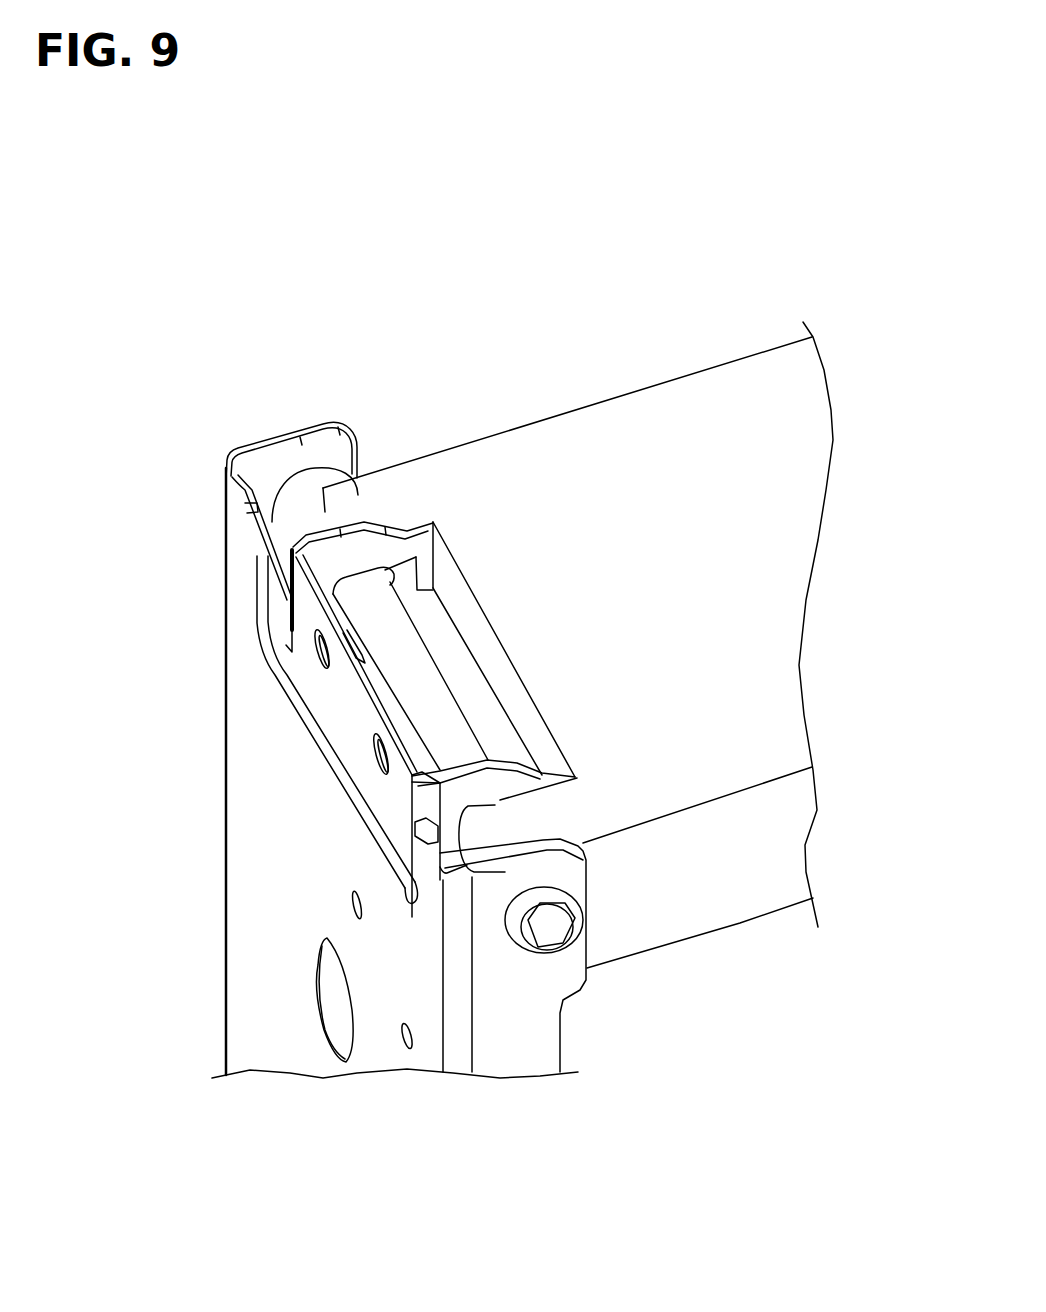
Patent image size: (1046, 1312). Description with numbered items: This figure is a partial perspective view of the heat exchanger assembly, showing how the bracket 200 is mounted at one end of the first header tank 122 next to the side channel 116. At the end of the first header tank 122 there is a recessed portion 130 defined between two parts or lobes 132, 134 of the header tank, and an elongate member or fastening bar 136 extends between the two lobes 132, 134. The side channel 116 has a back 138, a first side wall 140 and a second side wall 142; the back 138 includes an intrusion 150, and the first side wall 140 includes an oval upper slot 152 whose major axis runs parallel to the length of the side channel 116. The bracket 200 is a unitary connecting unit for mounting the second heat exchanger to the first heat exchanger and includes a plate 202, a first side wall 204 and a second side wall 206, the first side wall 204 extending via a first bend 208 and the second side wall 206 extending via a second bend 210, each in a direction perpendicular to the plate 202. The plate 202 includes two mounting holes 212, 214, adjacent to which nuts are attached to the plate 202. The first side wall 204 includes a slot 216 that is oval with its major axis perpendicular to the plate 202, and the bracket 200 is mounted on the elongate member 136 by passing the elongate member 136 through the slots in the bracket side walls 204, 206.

The side channel 116 is at (250, 1005).
The first header tank 122 is at (680, 415).
The recessed portion 130 is at (437, 632).
The lobe 132 is at (365, 500).
The lobe 134 is at (623, 788).
The elongate member 136 is at (362, 593).
The back 138 is at (260, 1047).
The first side wall 140 is at (513, 1030).
The second side wall 142 is at (270, 442).
The intrusion 150 is at (300, 705).
The upper slot 152 is at (540, 887).
The bracket 200 is at (357, 728).
The plate 202 is at (333, 693).
The first side wall 204 is at (343, 557).
The second side wall 206 is at (440, 845).
The first bend 208 is at (290, 551).
The second bend 210 is at (462, 806).
The mounting hole 212 is at (320, 650).
The mounting hole 214 is at (447, 767).
The slot 216 is at (415, 550).